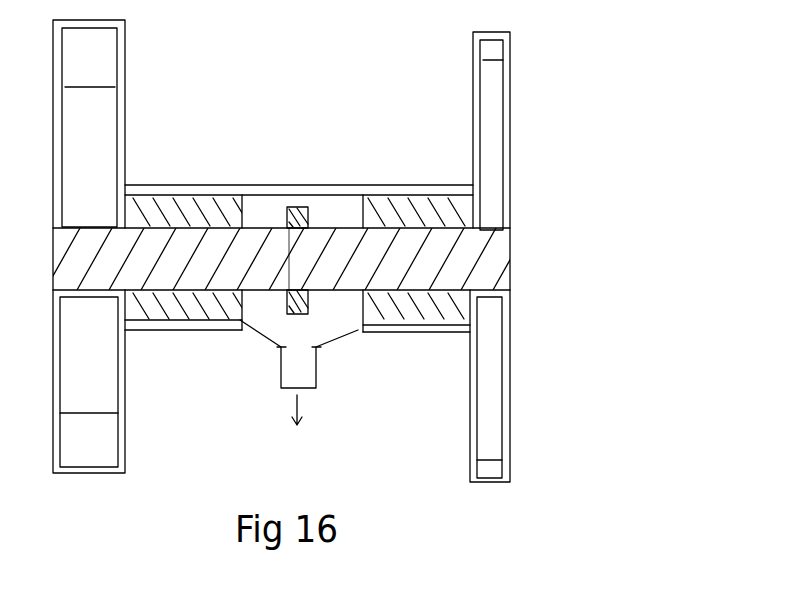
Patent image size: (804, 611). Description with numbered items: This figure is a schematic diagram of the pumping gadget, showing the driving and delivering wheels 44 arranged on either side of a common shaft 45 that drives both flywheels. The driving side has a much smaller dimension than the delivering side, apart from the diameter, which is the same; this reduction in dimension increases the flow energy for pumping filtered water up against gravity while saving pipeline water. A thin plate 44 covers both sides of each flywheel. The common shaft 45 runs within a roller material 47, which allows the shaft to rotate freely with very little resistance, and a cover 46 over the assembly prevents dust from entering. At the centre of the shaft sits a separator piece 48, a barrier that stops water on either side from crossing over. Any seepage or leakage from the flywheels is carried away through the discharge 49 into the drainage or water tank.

The driving and delivering wheels 44 is at (125, 113).
The shaft 45 is at (482, 265).
The cover 46 is at (322, 186).
The roller material 47 is at (417, 315).
The separator piece 48 is at (277, 312).
The discharge 49 is at (287, 407).